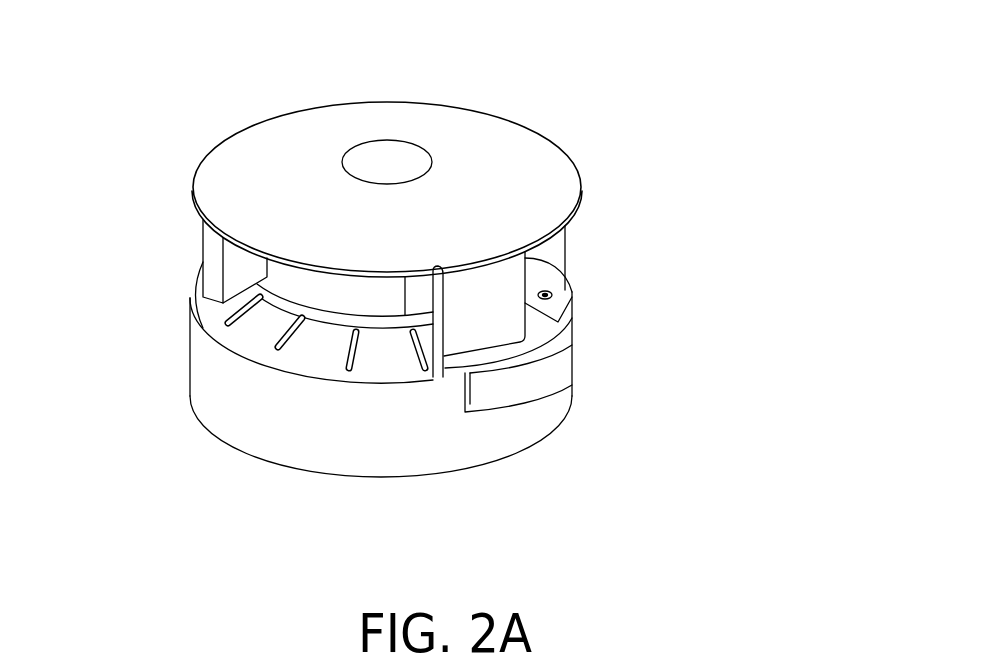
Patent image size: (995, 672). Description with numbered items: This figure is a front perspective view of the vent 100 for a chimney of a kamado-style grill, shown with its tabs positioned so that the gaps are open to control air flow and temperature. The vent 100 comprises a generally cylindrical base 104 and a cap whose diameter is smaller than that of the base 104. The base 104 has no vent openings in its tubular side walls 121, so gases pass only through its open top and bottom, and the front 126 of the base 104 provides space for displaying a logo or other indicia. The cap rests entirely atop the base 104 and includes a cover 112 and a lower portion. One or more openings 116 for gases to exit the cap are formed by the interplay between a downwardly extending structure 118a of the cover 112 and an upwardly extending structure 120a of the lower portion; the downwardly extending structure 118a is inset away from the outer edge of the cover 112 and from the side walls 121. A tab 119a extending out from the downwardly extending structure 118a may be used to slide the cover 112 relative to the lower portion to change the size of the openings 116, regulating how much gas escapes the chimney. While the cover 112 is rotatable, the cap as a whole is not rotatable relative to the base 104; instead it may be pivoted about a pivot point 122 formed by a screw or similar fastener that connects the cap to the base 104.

The vent 100 is at (557, 62).
The base 104 is at (406, 446).
The cover 112 is at (525, 173).
The opening 116 is at (393, 288).
The downwardly extending structure 118a is at (380, 275).
The tab 119a is at (437, 337).
The upwardly extending structure 120a is at (215, 252).
The tubular side wall 121 is at (548, 410).
The pivot point 122 is at (568, 290).
The front 126 is at (290, 423).